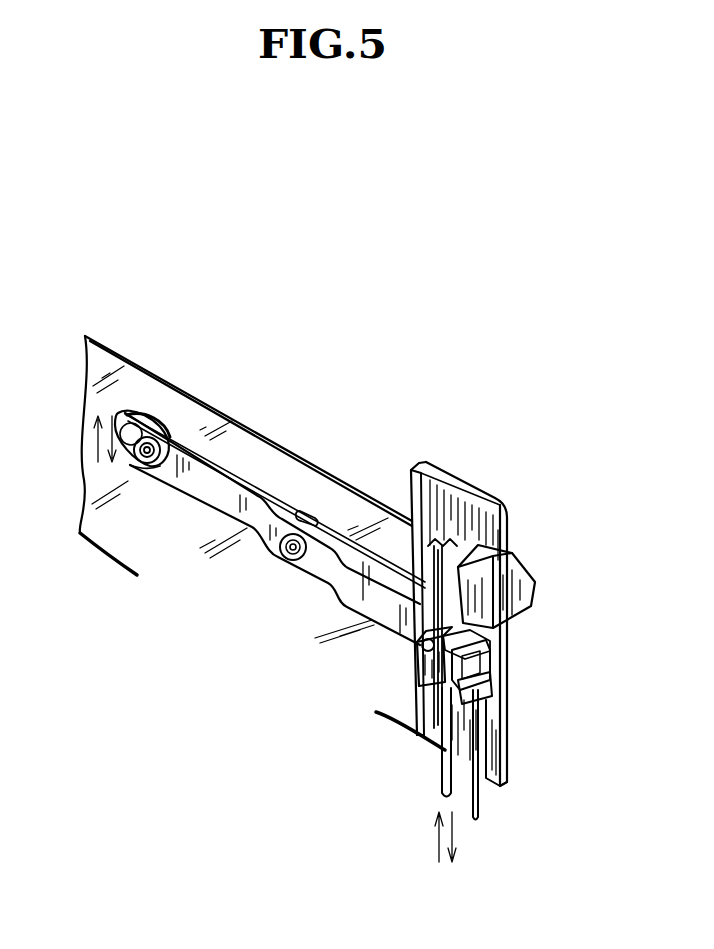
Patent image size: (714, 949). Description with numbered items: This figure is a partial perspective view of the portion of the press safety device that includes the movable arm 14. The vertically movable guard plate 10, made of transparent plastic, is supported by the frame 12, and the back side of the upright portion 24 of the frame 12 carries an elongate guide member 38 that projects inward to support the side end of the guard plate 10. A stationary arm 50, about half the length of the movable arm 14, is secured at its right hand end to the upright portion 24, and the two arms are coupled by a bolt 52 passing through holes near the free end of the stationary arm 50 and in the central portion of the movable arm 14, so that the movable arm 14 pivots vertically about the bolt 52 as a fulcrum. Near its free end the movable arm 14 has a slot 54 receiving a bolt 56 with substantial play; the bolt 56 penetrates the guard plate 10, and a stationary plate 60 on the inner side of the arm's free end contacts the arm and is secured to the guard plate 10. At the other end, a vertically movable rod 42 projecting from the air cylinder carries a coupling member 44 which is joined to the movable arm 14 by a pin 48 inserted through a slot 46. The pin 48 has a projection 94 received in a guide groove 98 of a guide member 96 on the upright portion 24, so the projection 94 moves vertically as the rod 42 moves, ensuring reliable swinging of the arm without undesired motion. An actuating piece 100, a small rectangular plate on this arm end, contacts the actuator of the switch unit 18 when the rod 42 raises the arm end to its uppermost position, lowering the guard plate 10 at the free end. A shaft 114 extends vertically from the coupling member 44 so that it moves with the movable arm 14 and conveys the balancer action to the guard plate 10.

The guard plate 10 is at (207, 437).
The frame 12 is at (522, 527).
The movable arm 14 is at (210, 490).
The switch unit 18 is at (507, 580).
The upright portion 24 is at (480, 518).
The guide member 38 is at (423, 485).
The rod 42 is at (447, 757).
The coupling member 44 is at (477, 698).
The slot 46 is at (480, 680).
The pin 48 is at (415, 665).
The stationary arm 50 is at (313, 516).
The bolt 52 is at (283, 557).
The slot 54 is at (118, 463).
The bolt 56 is at (142, 468).
The stationary plate 60 is at (128, 430).
The projection 94 is at (428, 640).
The guide member 96 is at (465, 532).
The guide groove 98 is at (420, 585).
The actuating piece 100 is at (472, 653).
The shaft 114 is at (477, 794).